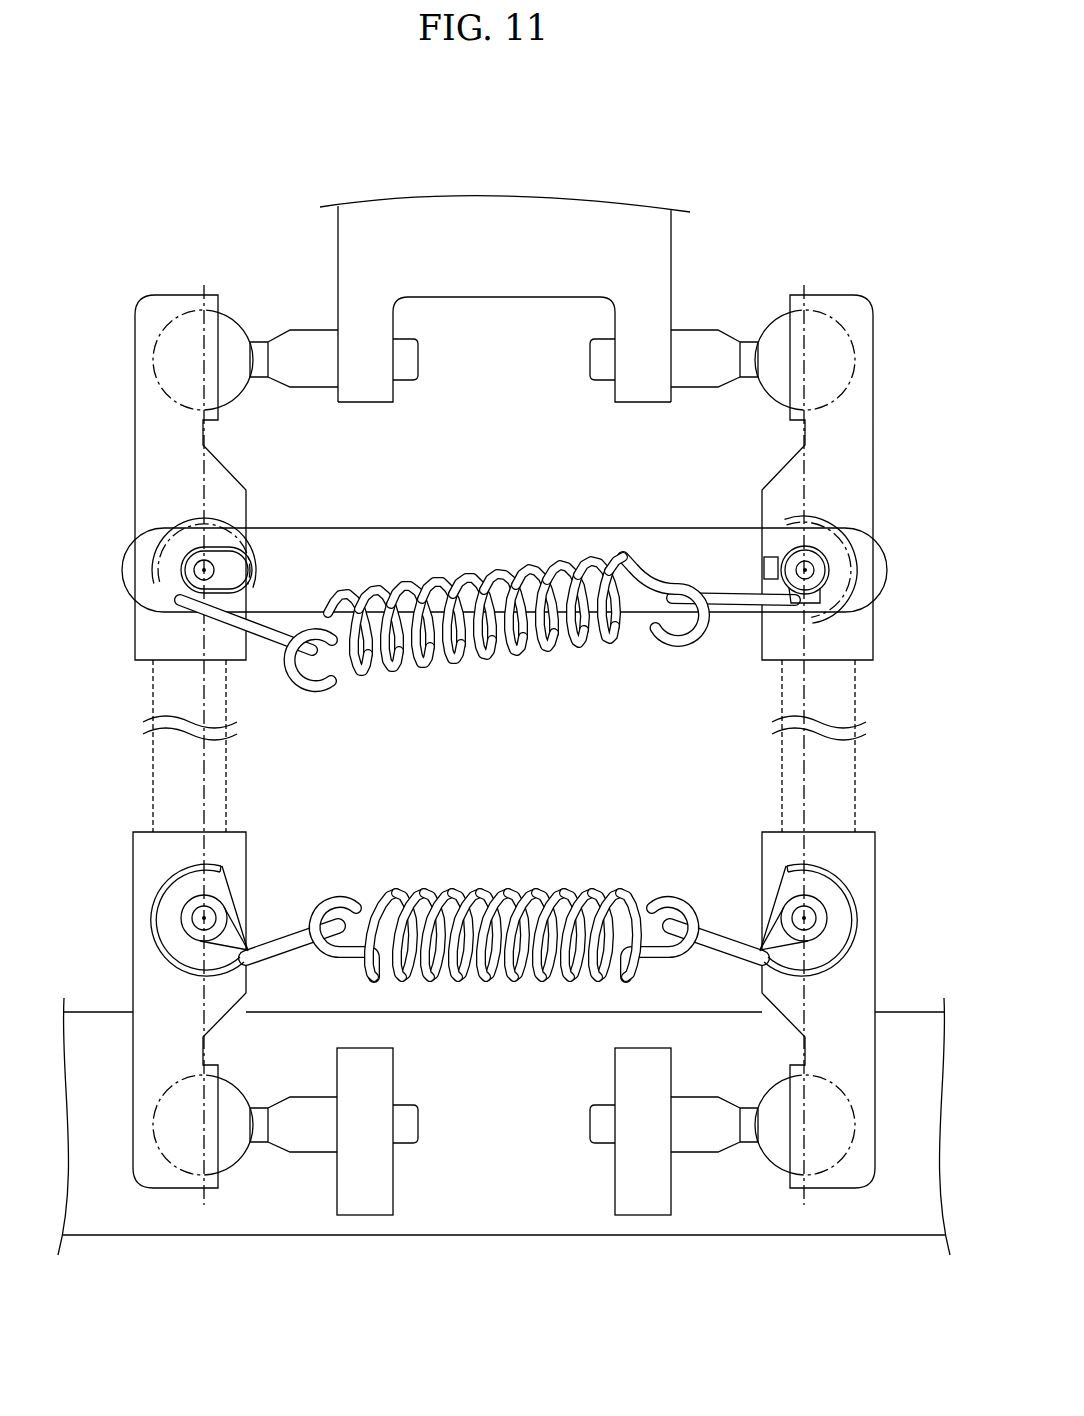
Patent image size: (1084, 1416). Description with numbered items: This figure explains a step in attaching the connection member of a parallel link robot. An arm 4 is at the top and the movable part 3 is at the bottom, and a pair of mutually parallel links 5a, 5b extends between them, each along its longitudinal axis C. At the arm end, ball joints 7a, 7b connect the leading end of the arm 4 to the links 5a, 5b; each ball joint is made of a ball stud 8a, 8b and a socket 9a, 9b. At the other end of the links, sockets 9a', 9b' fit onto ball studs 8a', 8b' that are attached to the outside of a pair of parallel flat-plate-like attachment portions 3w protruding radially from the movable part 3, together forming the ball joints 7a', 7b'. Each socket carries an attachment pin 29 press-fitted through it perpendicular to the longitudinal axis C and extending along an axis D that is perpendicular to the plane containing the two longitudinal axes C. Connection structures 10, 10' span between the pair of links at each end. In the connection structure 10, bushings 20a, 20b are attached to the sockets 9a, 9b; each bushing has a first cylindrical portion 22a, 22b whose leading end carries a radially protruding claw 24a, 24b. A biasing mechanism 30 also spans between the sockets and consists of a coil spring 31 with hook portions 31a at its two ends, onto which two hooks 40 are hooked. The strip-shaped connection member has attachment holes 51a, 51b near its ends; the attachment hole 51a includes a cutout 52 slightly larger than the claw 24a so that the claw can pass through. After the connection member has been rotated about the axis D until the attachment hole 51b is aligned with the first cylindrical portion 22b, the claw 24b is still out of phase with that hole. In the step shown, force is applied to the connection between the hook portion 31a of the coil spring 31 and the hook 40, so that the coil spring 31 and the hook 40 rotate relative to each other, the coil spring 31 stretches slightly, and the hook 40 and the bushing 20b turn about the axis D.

The movable part 3 is at (523, 1250).
The attachment portions 3w is at (372, 1217).
The arm 4 is at (500, 227).
The link 5a is at (855, 748).
The link 5b is at (153, 758).
The ball joint 7a is at (786, 171).
The ball joint 7b is at (228, 171).
The ball joint 7a' is at (772, 1330).
The ball joint 7b' is at (228, 1330).
The ball stud 8a is at (714, 292).
The ball stud 8b is at (294, 292).
The ball stud 8a' is at (714, 1201).
The ball stud 8b' is at (293, 1201).
The socket 9a is at (814, 428).
The socket 9b is at (194, 428).
The socket 9a' is at (815, 1068).
The socket 9b' is at (193, 1068).
The connection structure 10 is at (876, 466).
The connection structure 10' is at (909, 845).
The bushing 20a is at (700, 650).
The bushing 20b is at (300, 433).
The first cylindrical portion 22a is at (826, 596).
The first cylindrical portion 22b is at (206, 538).
The claw 24a is at (792, 600).
The claw 24b is at (248, 577).
The attachment pin 29 is at (200, 915).
The biasing mechanism 30 is at (482, 767).
The coil spring 31 is at (465, 670).
The hook portion 31a is at (325, 695).
The hook 40 is at (270, 668).
The attachment hole 51a is at (780, 530).
The attachment hole 51b is at (192, 587).
The cutout 52 is at (770, 560).
The longitudinal axis C is at (204, 795).
The axis D is at (204, 570).